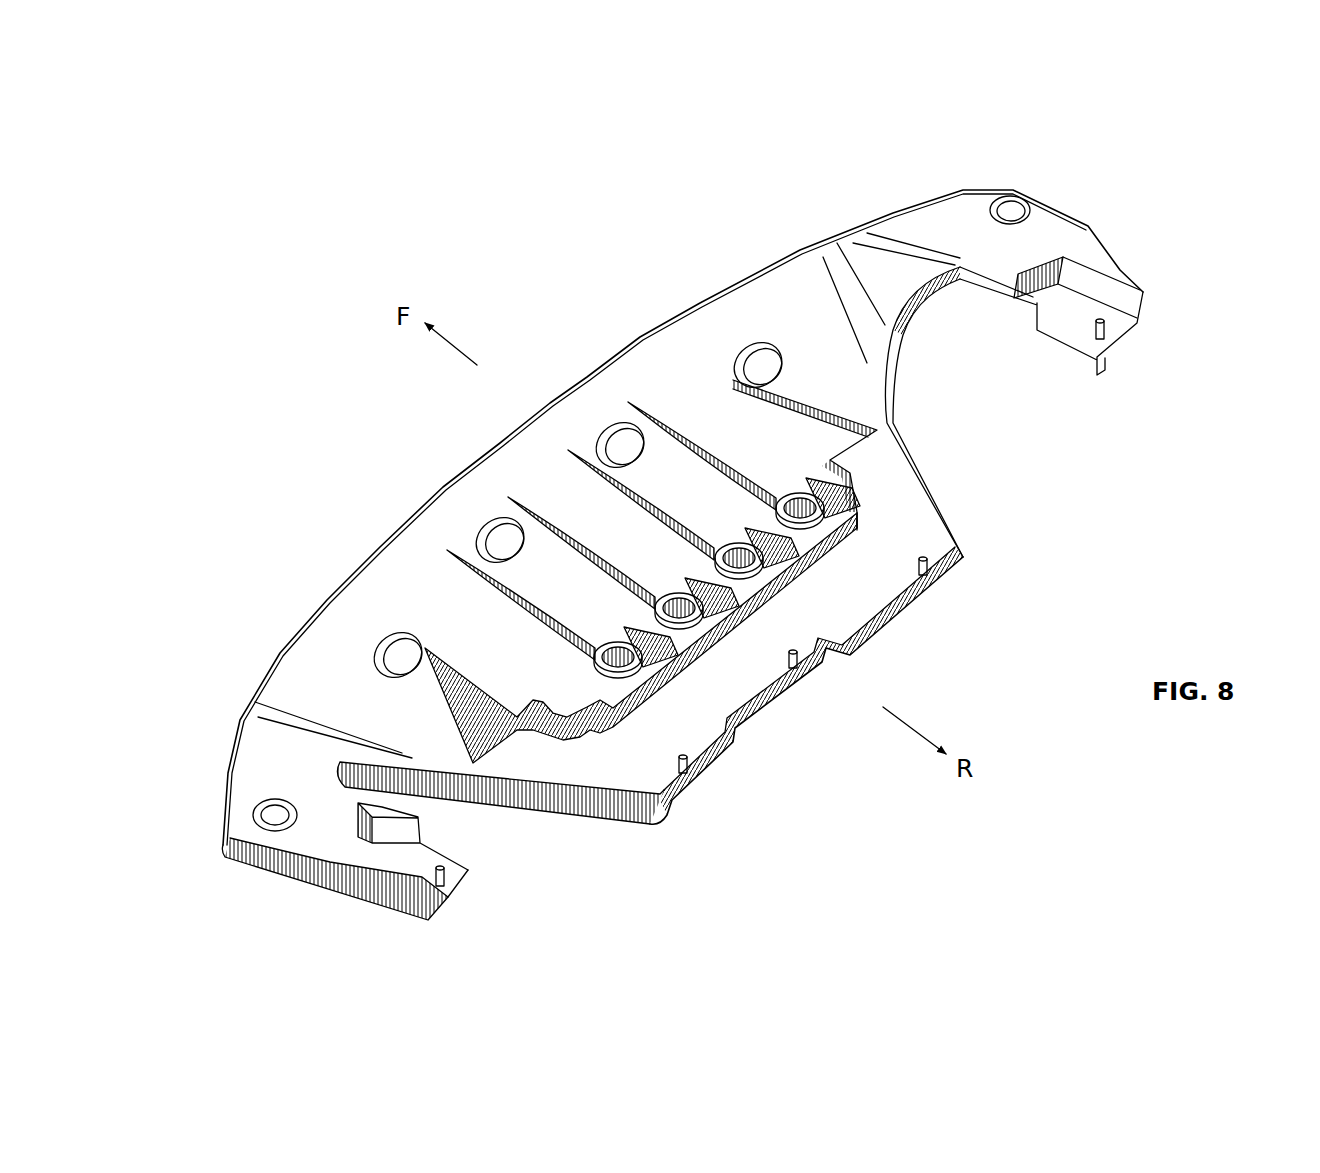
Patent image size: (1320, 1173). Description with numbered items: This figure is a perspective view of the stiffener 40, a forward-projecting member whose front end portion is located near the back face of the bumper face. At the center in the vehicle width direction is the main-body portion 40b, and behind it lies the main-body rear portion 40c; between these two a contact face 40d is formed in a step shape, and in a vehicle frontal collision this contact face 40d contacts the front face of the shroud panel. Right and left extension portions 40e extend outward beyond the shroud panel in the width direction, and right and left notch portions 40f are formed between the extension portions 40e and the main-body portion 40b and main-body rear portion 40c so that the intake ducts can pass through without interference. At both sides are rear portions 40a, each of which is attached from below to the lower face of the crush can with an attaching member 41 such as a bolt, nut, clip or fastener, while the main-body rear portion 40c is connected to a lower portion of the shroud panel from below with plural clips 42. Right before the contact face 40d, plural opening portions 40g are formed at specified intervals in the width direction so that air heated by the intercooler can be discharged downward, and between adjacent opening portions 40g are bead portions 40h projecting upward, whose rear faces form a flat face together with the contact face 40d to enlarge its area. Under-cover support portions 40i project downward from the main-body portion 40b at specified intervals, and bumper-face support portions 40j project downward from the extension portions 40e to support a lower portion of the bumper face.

The stiffener 40 is at (690, 284).
The rear portion 40a is at (1127, 343).
The main-body portion 40b is at (537, 468).
The main-body rear portion 40c is at (870, 605).
The contact face 40d is at (850, 547).
The extension portion 40e is at (1047, 217).
The notch portion 40f is at (897, 360).
The opening portion 40g is at (800, 505).
The bead portion 40h is at (752, 575).
The under-cover support portion 40i is at (760, 363).
The bumper-face support portion 40j is at (1002, 206).
The attaching member 41 is at (1090, 337).
The clip 42 is at (933, 560).